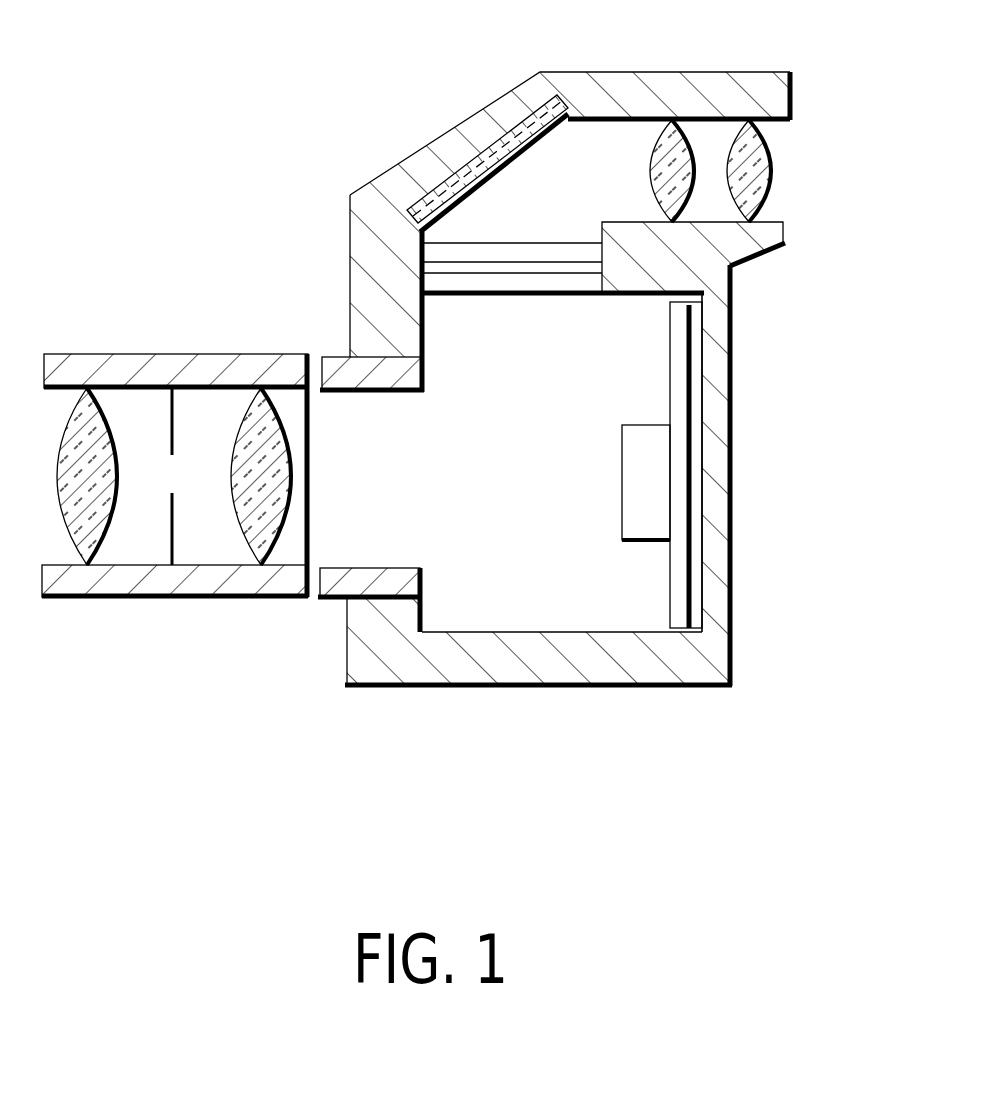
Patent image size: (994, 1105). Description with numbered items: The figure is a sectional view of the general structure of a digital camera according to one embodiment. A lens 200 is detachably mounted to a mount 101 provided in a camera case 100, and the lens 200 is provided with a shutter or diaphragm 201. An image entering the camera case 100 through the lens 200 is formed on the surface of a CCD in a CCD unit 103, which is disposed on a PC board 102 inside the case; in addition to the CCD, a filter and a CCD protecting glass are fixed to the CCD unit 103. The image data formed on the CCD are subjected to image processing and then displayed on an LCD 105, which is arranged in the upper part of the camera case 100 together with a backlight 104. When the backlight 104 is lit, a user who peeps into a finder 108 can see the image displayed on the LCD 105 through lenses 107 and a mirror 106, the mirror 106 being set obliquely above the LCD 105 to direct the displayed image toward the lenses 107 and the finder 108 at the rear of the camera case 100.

The camera case 100 is at (670, 670).
The mount 101 is at (330, 601).
The PC board 102 is at (680, 352).
The CCD unit 103 is at (643, 503).
The backlight 104 is at (493, 283).
The LCD 105 is at (510, 252).
The mirror 106 is at (453, 173).
The lenses 107 is at (747, 143).
The finder 108 is at (768, 212).
The lens 200 is at (87, 367).
The shutter or diaphragm 201 is at (167, 523).